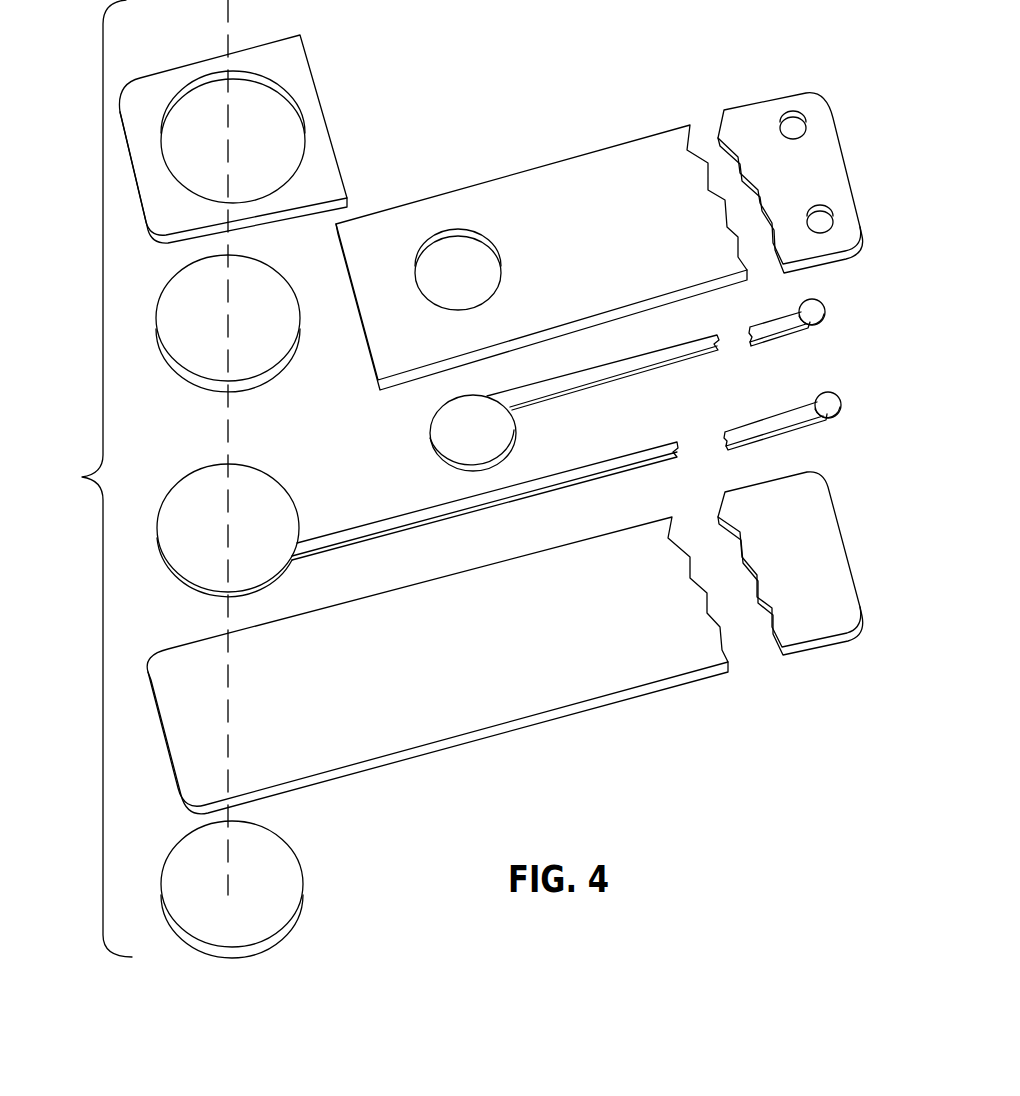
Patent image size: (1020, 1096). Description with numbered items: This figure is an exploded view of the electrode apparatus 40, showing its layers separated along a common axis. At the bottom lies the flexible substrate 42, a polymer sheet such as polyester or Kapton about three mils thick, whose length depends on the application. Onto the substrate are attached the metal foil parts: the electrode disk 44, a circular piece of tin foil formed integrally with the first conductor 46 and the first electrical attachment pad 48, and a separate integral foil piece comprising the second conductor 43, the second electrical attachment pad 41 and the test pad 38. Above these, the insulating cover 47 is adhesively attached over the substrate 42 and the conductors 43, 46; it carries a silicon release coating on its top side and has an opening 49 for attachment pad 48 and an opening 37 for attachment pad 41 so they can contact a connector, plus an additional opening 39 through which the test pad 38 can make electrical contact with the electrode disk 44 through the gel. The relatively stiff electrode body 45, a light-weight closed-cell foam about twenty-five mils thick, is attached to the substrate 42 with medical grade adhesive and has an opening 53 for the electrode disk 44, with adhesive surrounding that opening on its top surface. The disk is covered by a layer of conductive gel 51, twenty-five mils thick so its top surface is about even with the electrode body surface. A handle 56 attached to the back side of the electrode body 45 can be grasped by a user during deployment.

The electrode apparatus 40 is at (84, 478).
The electrode body 45 is at (163, 90).
The opening 53 is at (262, 128).
The conductive gel 51 is at (173, 337).
The electrode disk 44 is at (417, 509).
The first conductor 46 is at (418, 521).
The test pad 38 is at (539, 403).
The second conductor 43 is at (608, 368).
The insulating cover 47 is at (611, 173).
The additional opening 39 is at (450, 263).
The opening 37 is at (790, 126).
The opening 49 is at (826, 221).
The second electrical attachment pad 41 is at (815, 312).
The first electrical attachment pad 48 is at (830, 405).
The flexible substrate 42 is at (527, 698).
The handle 56 is at (268, 868).